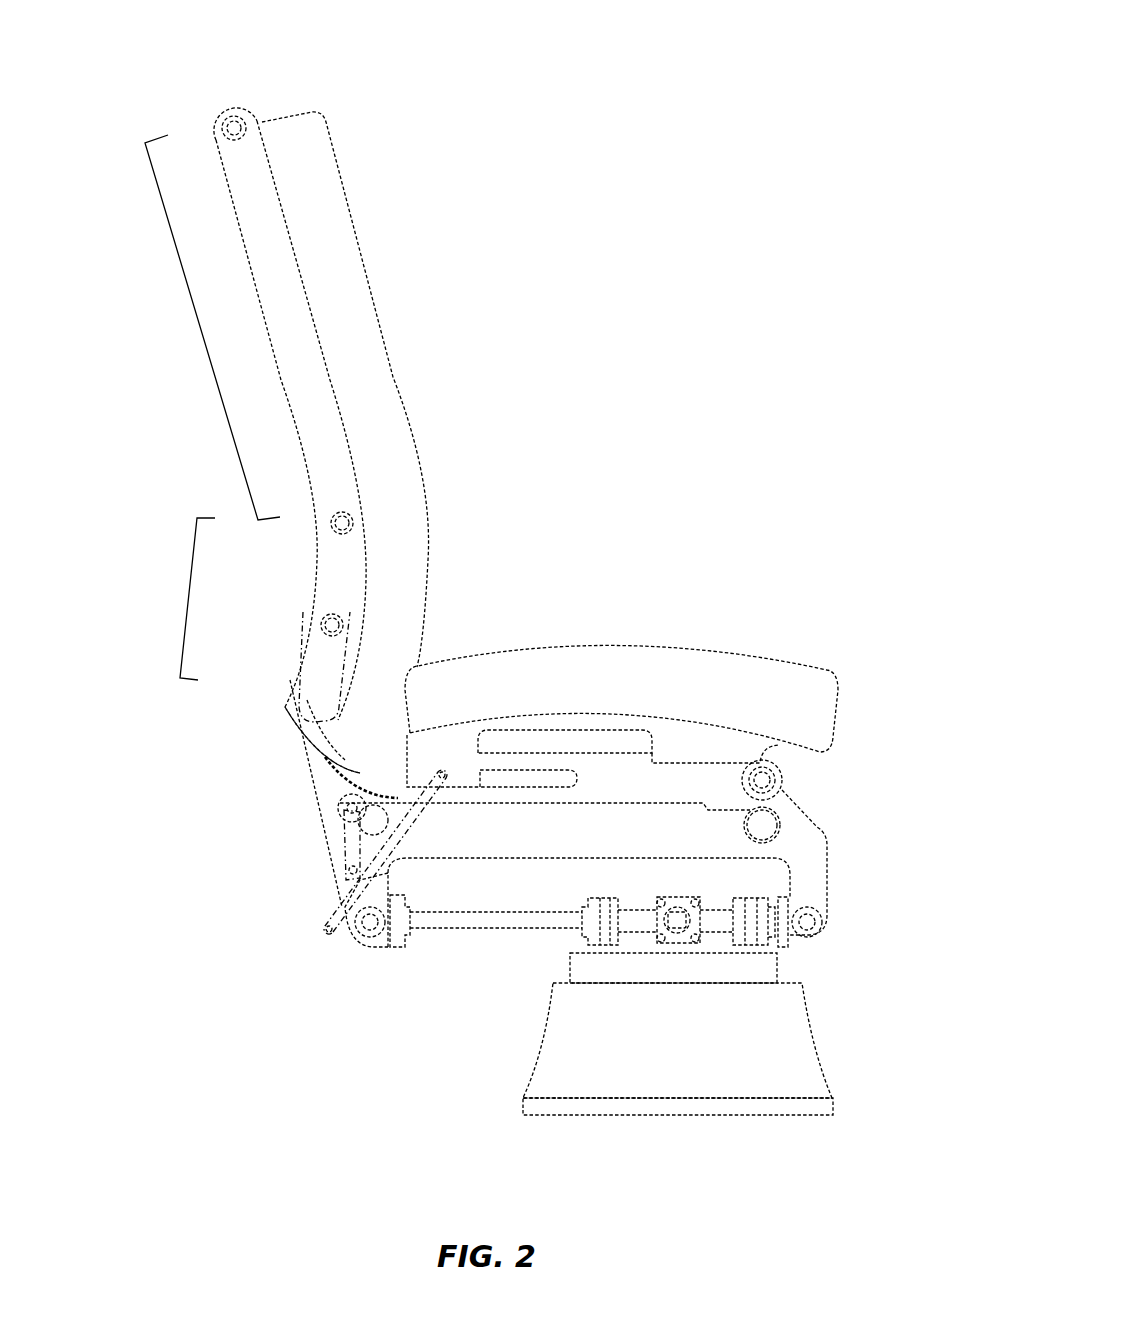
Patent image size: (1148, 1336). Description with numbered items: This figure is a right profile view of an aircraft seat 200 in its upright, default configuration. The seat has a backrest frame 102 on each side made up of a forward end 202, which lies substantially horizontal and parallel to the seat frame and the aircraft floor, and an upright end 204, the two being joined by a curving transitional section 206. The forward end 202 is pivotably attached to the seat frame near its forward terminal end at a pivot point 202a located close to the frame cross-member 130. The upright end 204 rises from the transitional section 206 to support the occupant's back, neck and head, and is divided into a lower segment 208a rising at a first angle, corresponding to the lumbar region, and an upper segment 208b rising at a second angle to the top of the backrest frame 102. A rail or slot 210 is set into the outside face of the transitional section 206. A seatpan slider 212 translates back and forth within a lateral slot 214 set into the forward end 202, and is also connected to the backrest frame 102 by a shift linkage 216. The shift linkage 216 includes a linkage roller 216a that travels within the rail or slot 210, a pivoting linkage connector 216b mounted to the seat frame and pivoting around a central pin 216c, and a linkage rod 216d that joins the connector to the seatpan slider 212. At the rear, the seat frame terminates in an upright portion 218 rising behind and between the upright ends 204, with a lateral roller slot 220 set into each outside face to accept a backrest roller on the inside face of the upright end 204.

The aircraft seat 200 is at (180, 62).
The backrest frame 102 is at (205, 412).
The upright end 204 is at (308, 400).
The transitional section 206 is at (348, 757).
The lower segment 208a is at (185, 598).
The upper segment 208b is at (178, 257).
The upright portion 218 is at (292, 670).
The lateral roller slot 220 is at (337, 610).
The forward end 202 is at (667, 783).
The pivot point 202a is at (763, 780).
The frame cross-member 130 is at (762, 825).
The seatpan slider 212 is at (452, 767).
The rail or slot 210 is at (342, 792).
The shift linkage 216 is at (284, 950).
The linkage roller 216a is at (343, 805).
The pivoting linkage connector 216b is at (352, 843).
The central pin 216c is at (352, 877).
The linkage rod 216d is at (377, 870).
The lateral slot 214 is at (545, 780).